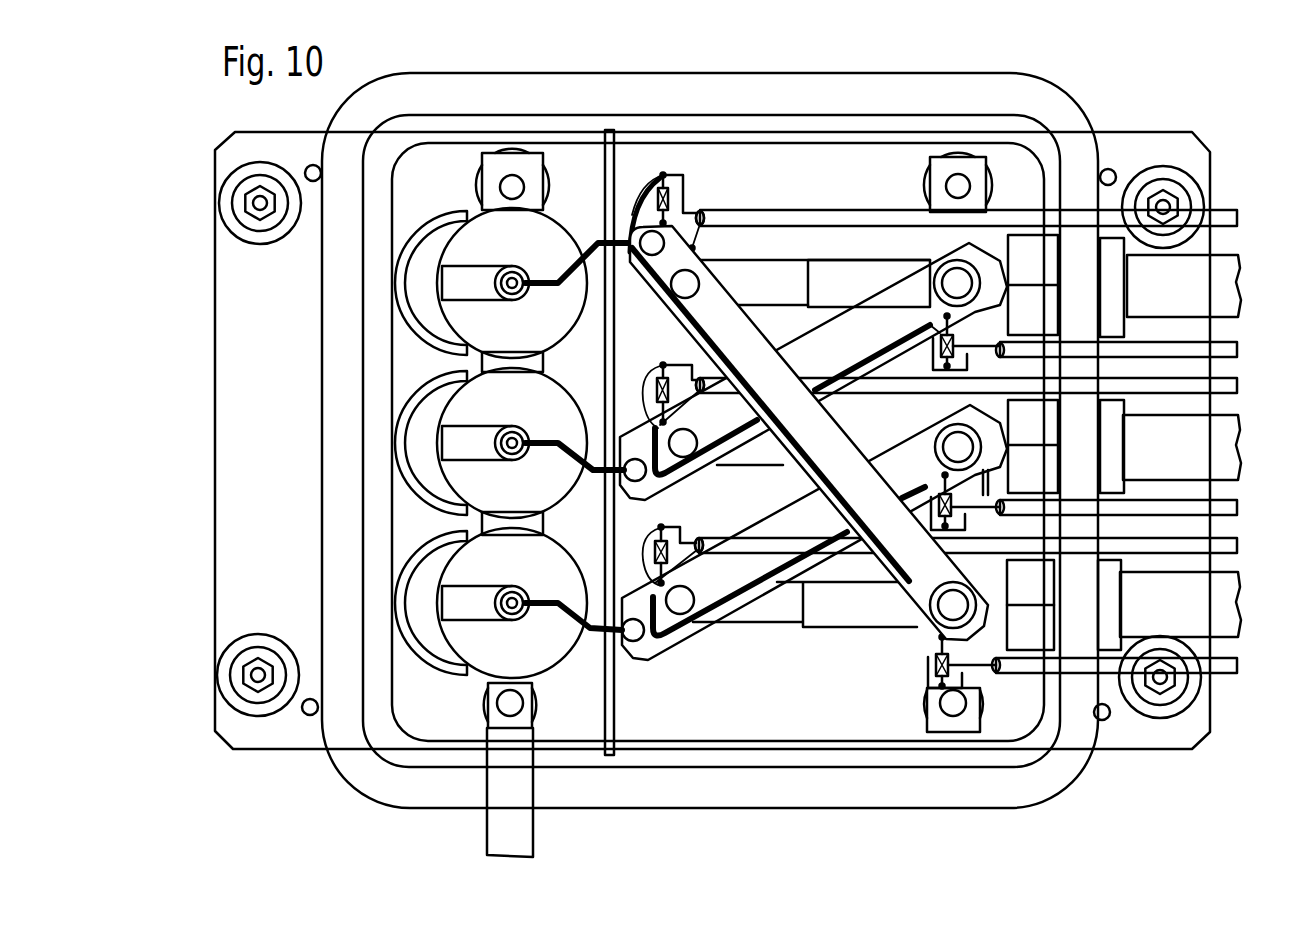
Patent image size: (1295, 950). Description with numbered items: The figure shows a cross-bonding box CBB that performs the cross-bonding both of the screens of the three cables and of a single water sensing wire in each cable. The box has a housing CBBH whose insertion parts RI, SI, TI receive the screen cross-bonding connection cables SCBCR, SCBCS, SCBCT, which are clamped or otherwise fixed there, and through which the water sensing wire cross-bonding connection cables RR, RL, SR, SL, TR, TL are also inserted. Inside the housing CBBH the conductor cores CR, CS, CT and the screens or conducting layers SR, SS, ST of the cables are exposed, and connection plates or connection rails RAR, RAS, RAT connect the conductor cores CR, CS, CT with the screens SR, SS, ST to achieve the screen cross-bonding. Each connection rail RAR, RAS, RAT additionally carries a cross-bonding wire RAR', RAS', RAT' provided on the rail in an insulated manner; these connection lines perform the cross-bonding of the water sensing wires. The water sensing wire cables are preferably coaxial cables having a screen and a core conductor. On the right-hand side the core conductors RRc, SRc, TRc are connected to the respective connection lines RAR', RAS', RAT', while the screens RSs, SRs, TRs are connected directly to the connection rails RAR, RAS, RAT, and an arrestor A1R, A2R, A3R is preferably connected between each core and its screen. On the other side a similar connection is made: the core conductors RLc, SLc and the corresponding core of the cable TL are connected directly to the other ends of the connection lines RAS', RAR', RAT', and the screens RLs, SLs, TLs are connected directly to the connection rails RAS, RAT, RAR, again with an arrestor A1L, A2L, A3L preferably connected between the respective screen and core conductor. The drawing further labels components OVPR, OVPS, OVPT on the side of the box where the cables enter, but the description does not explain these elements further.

The circuit breaker base plate CBB is at (1280, 96).
The circuit breaker housing CBBH is at (838, 112).
The overvoltage protection unit, phase R OVPR is at (473, 247).
The overvoltage protection unit, phase S OVPS is at (473, 408).
The overvoltage protection unit, phase T OVPT is at (473, 568).
The arrestor A1R is at (658, 201).
The arrestor A2R is at (657, 391).
The arrestor A3R is at (655, 552).
The arrestor A1L is at (920, 370).
The arrestor A2L is at (928, 490).
The arrestor A3L is at (937, 663).
The core conductor RRc is at (685, 186).
The core conductor SRc is at (692, 380).
The core conductor TRc is at (670, 540).
The conductor core RLc is at (965, 328).
The conductor core SLc is at (955, 535).
The screen RSs is at (703, 237).
The screen SRs is at (698, 395).
The screen TRs is at (698, 550).
The water sensing wire cross-bonding connection cable RR is at (1245, 216).
The water sensing wire cross-bonding connection cable SR is at (1243, 384).
The water sensing wire cross-bonding connection cable TR is at (1245, 545).
The water sensing wire cross-bonding connection cable RL is at (1245, 349).
The water sensing wire cross-bonding connection cable SL is at (1245, 506).
The water sensing wire cross-bonding connection cable TL is at (1240, 665).
The conductor core CR is at (750, 282).
The conductor core CS is at (765, 448).
The conductor core CT is at (777, 603).
The connection rail RAS is at (869, 270).
The cross-bonding wire RAS' is at (813, 371).
The connection rail RAT is at (941, 472).
The cross-bonding wire RAT' is at (814, 532).
The connection rail RAR is at (809, 433).
The cross-bonding wire RAR' is at (770, 414).
The screen RLs is at (1040, 320).
The screen SS is at (1043, 434).
The screen SLs is at (1040, 480).
The screen ST is at (1040, 594).
The screen TLs is at (1040, 637).
The insertion part RI is at (1110, 318).
The insertion part SI is at (1108, 455).
The insertion part TI is at (1108, 612).
The screen cross-bonding connection cable SCBCR is at (1184, 286).
The screen cross-bonding connection cable SCBCS is at (1182, 447).
The screen cross-bonding connection cable SCBCT is at (1180, 604).